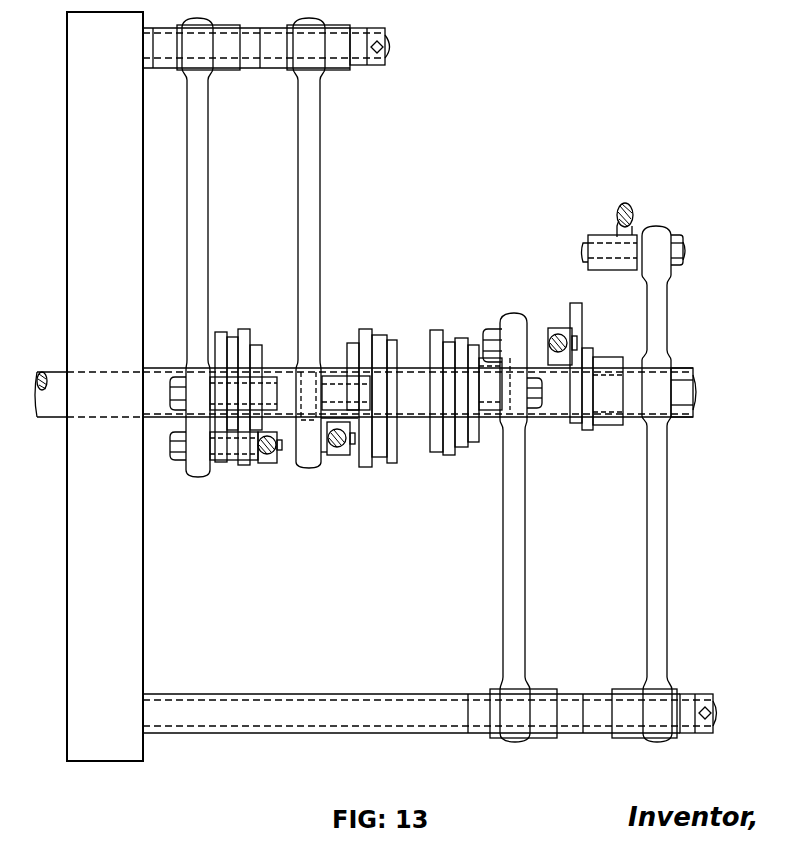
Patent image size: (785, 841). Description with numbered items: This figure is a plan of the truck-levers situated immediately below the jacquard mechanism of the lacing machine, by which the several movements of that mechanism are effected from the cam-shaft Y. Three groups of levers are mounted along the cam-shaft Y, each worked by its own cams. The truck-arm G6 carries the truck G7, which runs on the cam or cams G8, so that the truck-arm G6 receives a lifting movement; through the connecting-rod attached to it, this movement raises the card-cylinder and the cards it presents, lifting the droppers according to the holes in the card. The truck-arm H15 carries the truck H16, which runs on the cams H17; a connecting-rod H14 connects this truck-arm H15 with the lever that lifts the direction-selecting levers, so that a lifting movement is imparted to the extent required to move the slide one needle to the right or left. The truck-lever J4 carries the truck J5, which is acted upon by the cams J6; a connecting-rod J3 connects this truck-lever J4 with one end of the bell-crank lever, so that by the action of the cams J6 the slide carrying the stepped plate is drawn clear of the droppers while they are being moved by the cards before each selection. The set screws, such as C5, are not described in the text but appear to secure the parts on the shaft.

The truck-lever J4 is at (211, 232).
The truck-arm G6 is at (322, 160).
The cam-shaft Y is at (365, 392).
The truck J5 is at (221, 420).
The cams J6 is at (242, 329).
The connecting-rod J3 is at (268, 458).
The set screw C5 is at (335, 456).
The cam or cams G8 is at (391, 338).
The truck G7 is at (389, 352).
The truck H16 is at (449, 442).
The cams H17 is at (461, 338).
The truck-arm H15 is at (529, 593).
The connecting-rod H14 is at (556, 329).